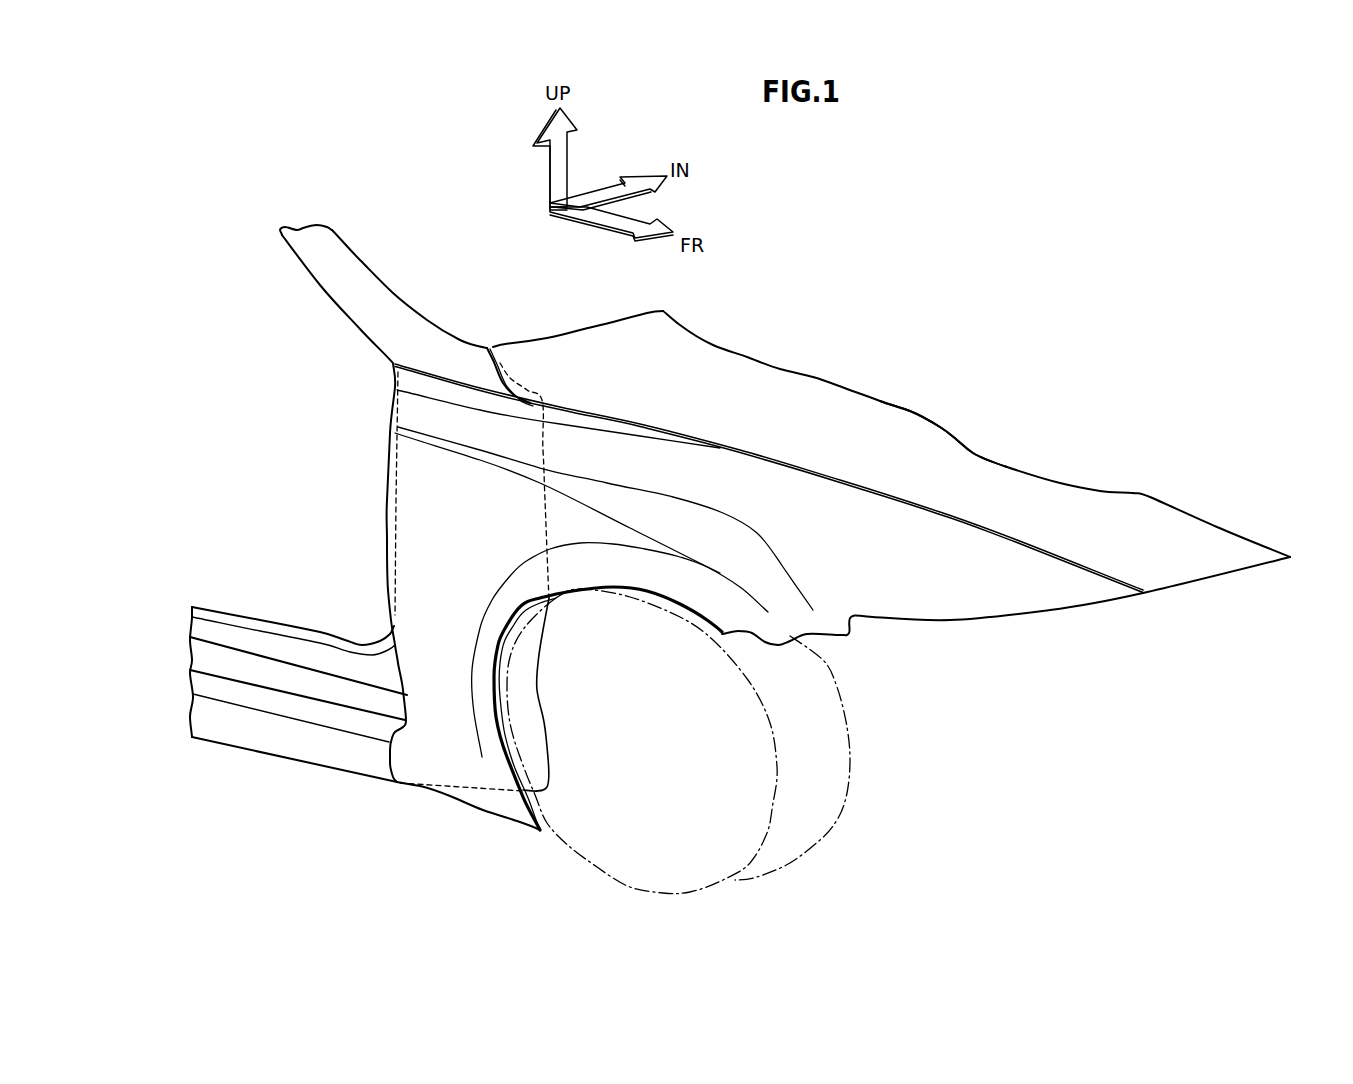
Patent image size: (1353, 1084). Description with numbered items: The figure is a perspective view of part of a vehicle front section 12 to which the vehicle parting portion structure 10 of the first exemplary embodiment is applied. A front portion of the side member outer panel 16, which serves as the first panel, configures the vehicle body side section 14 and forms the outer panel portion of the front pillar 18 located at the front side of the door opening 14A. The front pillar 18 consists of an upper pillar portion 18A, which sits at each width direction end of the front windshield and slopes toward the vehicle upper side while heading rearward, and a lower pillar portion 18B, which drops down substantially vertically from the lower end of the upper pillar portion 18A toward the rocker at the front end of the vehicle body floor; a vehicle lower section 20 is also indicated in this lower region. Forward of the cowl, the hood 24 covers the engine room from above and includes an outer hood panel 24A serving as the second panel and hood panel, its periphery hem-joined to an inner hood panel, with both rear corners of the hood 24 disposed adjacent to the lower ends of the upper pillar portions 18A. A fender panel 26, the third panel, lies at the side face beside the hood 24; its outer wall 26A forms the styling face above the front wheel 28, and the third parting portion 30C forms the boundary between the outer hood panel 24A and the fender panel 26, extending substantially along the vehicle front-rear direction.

The vehicle parting portion structure 10 is at (546, 352).
The vehicle front section 12 is at (905, 216).
The vehicle body side section 14 is at (223, 770).
The door opening 14A is at (294, 631).
The side member outer panel 16 is at (450, 314).
The front pillar 18 is at (350, 353).
The upper pillar portion 18A is at (325, 268).
The lower pillar portion 18B is at (407, 560).
The vehicle lower section 20 is at (292, 760).
The hood 24 is at (815, 389).
The outer hood panel 24A is at (916, 428).
The fender panel 26 is at (584, 526).
The outer wall 26A is at (654, 543).
The front wheel 28 is at (532, 836).
The third parting portion 30C is at (844, 470).